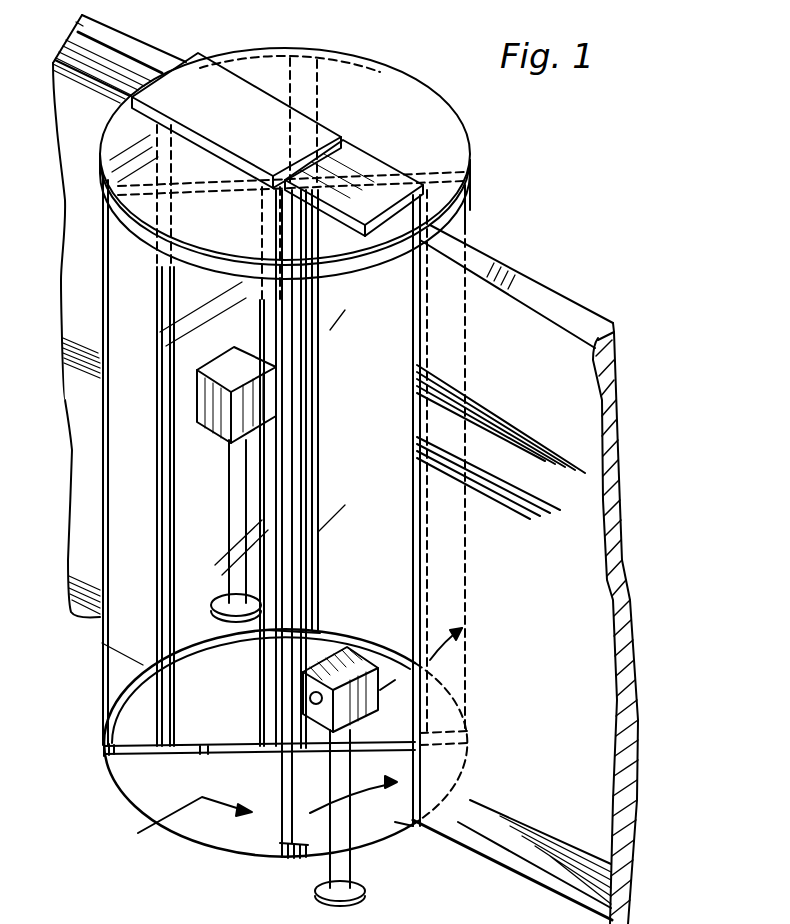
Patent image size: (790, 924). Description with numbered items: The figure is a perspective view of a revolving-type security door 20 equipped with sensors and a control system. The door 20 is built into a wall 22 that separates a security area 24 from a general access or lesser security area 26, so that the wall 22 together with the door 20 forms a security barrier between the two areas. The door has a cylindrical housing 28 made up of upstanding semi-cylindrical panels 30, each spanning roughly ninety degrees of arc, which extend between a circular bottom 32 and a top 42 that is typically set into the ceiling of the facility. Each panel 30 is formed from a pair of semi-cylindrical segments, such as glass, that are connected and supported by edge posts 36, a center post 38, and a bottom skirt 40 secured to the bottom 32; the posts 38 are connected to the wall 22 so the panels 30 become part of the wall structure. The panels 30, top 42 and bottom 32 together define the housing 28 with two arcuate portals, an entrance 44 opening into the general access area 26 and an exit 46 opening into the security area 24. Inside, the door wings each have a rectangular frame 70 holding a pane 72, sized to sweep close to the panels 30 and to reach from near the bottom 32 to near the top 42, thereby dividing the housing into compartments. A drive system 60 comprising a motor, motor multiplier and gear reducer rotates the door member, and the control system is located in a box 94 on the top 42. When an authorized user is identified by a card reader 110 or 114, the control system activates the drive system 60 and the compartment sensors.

The security door 20 is at (458, 82).
The wall 22 is at (96, 126).
The security area 24 is at (580, 212).
The general access area 26 is at (46, 492).
The cylindrical housing 28 is at (385, 370).
The semi-cylindrical panels 30 is at (392, 498).
The circular bottom 32 is at (135, 790).
The edge posts 36 is at (272, 830).
The center post 38 is at (422, 392).
The bottom skirt 40 is at (385, 834).
The top 42 is at (445, 140).
The entrance 44 is at (184, 808).
The exit 46 is at (404, 728).
The drive system 60 is at (230, 103).
The rectangular frame 70 is at (236, 752).
The pane 72 is at (208, 752).
The box 94 is at (350, 180).
The card reader 110 is at (340, 652).
The card reader 114 is at (236, 352).